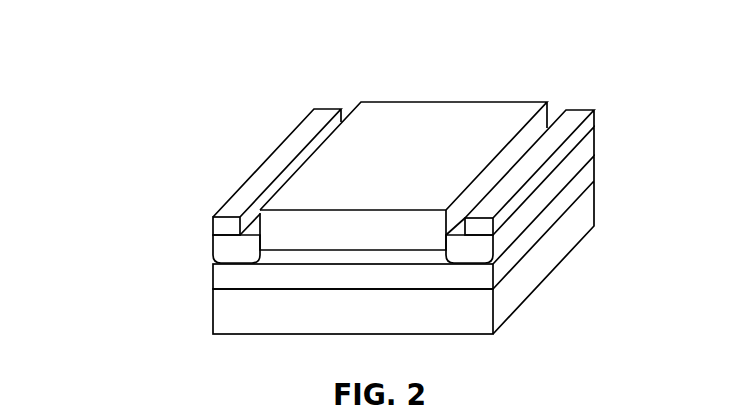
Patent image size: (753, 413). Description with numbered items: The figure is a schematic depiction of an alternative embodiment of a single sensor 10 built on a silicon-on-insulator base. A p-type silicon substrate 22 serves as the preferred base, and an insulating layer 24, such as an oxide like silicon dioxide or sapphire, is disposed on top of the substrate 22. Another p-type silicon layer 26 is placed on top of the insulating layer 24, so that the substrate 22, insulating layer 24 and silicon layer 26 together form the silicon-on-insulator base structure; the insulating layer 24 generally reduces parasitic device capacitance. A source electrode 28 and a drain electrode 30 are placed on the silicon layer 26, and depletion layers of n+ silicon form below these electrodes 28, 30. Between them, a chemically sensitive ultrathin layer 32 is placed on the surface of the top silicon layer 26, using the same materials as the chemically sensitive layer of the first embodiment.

The single sensor 10 is at (136, 50).
The p-type silicon substrate 22 is at (424, 314).
The insulating layer 24 is at (577, 187).
The p-type silicon layer 26 is at (240, 249).
The source electrode 28 is at (323, 115).
The drain electrode 30 is at (571, 115).
The chemically sensitive ultrathin layer 32 is at (434, 110).